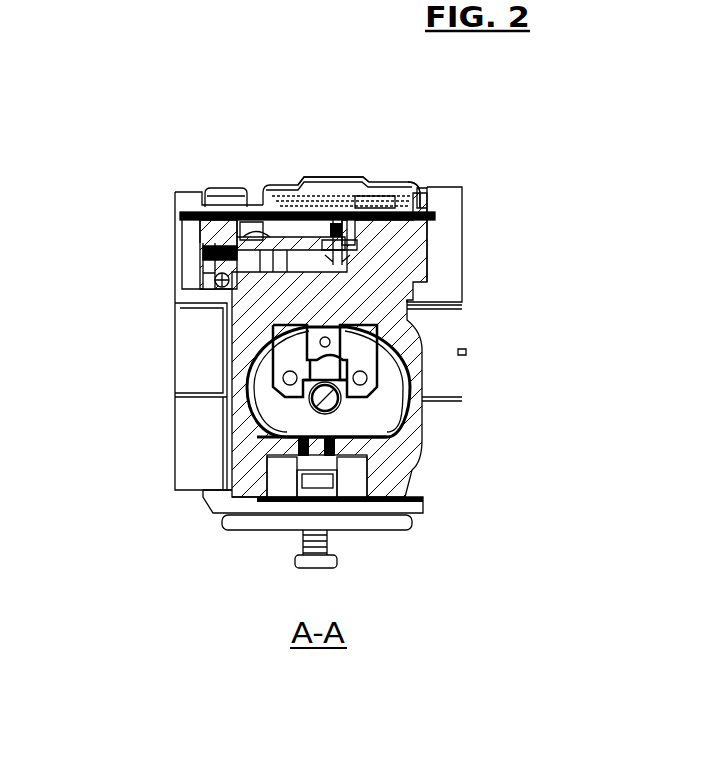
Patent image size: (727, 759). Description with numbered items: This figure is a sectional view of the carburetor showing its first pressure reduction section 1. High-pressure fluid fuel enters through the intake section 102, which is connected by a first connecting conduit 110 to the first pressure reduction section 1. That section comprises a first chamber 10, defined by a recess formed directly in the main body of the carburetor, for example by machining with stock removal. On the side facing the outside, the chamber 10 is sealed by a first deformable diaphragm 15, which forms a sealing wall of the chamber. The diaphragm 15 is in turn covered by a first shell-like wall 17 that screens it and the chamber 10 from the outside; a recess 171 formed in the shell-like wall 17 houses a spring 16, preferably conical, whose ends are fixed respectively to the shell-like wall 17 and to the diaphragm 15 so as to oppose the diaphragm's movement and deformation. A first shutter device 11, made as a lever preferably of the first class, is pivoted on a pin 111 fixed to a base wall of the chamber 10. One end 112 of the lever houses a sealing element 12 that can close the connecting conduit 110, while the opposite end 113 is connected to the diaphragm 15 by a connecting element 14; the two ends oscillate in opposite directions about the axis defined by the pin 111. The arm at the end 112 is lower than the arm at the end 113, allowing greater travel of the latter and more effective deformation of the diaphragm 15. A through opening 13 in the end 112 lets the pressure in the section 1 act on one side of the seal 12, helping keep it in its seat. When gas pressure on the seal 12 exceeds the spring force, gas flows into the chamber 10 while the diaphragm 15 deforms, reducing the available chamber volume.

The first pressure reduction section 1 is at (398, 247).
The first chamber 10 is at (392, 263).
The first shutter device 11 is at (408, 340).
The sealing element 12 is at (205, 253).
The through opening 13 is at (200, 243).
The connecting element 14 is at (330, 210).
The first deformable diaphragm 15 is at (435, 205).
The spring 16 is at (270, 186).
The first shell-like wall 17 is at (265, 190).
The intake section 102 is at (176, 307).
The first connecting conduit 110 is at (205, 270).
The pin 111 is at (223, 190).
The end 112 is at (207, 247).
The end 113 is at (368, 208).
The recess 171 is at (420, 185).